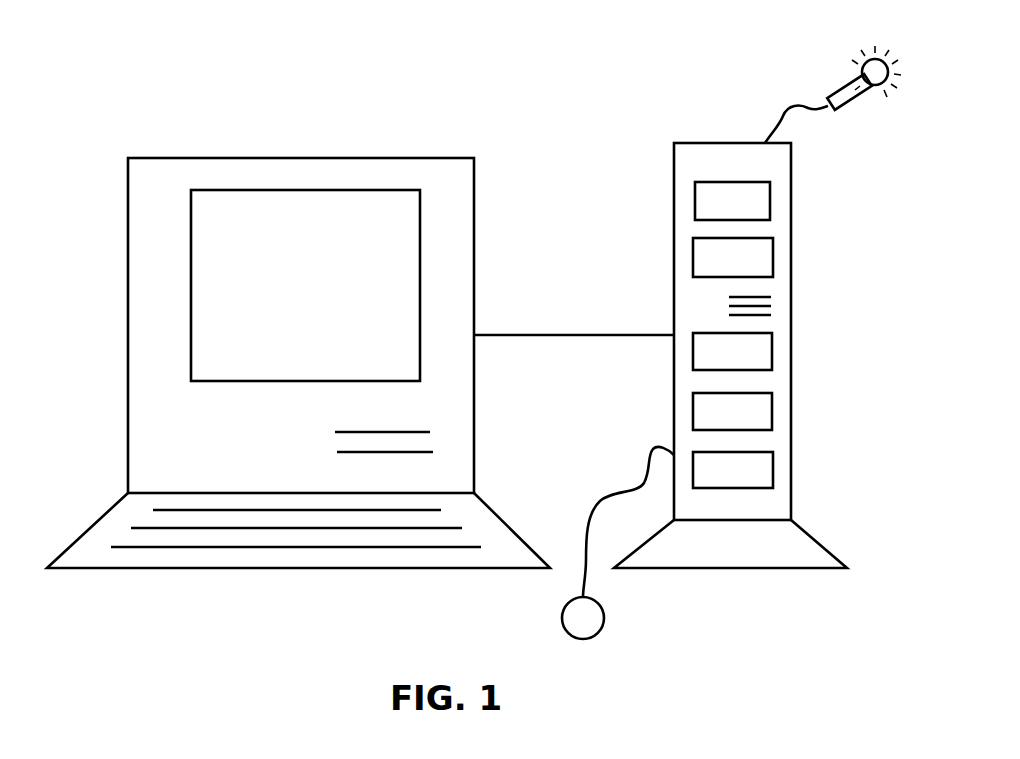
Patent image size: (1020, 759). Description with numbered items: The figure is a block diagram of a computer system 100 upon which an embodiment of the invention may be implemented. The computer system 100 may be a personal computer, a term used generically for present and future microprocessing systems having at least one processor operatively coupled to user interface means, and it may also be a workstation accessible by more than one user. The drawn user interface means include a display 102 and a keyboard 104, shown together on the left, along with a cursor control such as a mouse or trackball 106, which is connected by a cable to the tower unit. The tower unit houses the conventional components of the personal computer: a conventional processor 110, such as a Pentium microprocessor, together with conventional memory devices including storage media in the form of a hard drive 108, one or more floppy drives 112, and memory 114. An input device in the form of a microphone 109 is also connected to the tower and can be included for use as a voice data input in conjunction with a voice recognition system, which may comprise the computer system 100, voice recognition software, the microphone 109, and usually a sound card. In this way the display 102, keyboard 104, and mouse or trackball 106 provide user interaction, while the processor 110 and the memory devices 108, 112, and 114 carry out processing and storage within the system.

The computer system 100 is at (700, 88).
The display 102 is at (307, 158).
The keyboard 104 is at (513, 530).
The mouse or trackball 106 is at (607, 637).
The storage media 108 is at (773, 470).
The microphone 109 is at (838, 83).
The processor 110 is at (772, 410).
The floppy drive 112 is at (770, 201).
The memory 114 is at (772, 350).